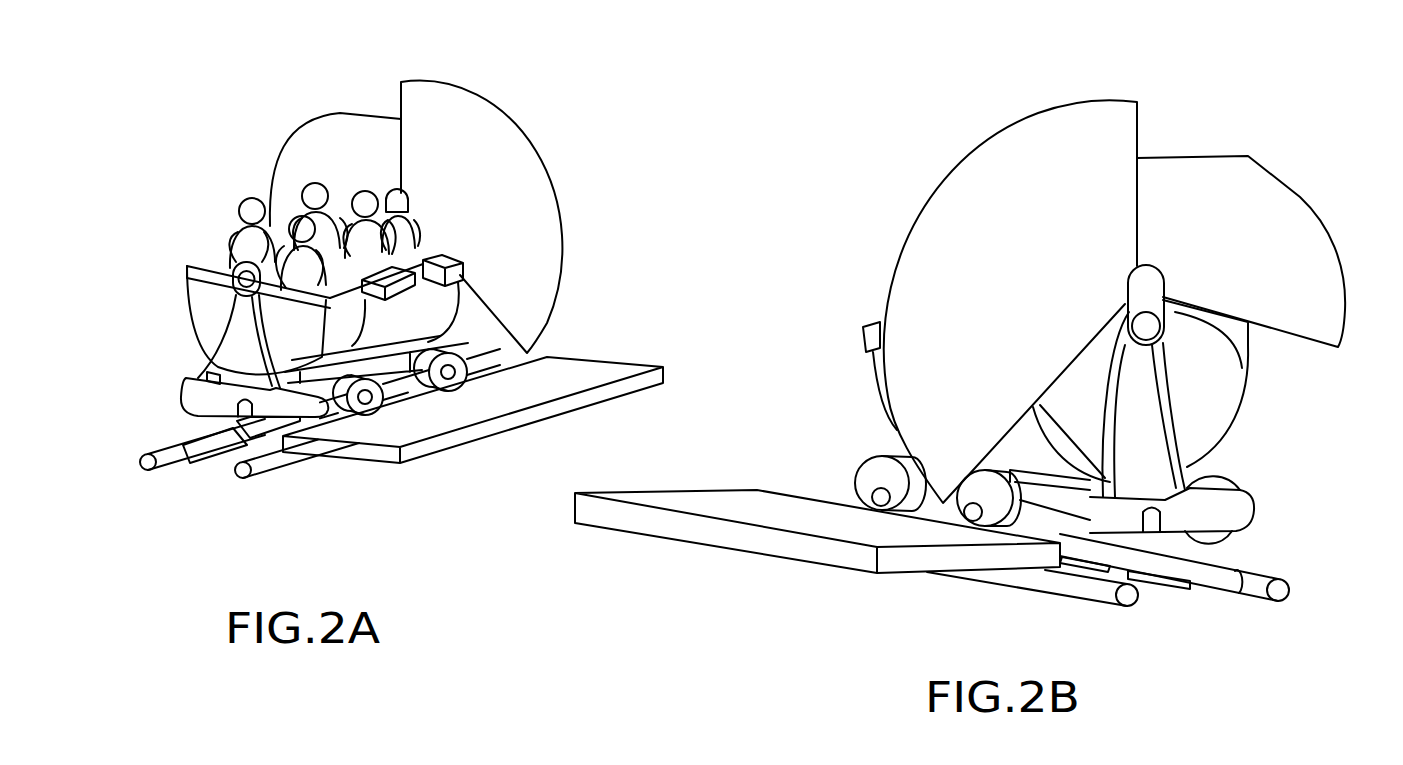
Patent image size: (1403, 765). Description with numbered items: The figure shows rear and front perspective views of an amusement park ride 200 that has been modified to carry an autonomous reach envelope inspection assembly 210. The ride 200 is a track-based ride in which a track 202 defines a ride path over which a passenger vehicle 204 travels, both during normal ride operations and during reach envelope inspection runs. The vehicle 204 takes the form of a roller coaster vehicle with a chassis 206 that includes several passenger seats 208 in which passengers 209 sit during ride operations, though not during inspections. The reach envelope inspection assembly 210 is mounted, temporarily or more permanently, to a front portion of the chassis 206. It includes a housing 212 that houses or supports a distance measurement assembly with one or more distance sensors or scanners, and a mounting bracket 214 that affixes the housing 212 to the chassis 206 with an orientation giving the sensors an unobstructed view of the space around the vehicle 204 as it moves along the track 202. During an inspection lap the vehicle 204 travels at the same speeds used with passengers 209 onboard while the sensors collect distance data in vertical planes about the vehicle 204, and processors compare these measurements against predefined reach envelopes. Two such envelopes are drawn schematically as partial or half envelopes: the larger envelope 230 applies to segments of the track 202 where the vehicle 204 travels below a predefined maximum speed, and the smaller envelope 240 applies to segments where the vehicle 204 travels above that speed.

In FIG. 2A, the amusement park ride 200 is at (154, 414).
In FIG. 2B, the amusement park ride 200 is at (1244, 622).
In FIG. 2A, the track 202 is at (277, 487).
In FIG. 2B, the track 202 is at (1314, 583).
In FIG. 2A, the passenger vehicle 204 is at (165, 290).
In FIG. 2A, the chassis 206 is at (190, 337).
In FIG. 2B, the chassis 206 is at (1252, 318).
In FIG. 2A, the passenger seats 208 is at (223, 248).
In FIG. 2A, the passengers 209 is at (228, 250).
In FIG. 2A, the reach envelope inspection assembly 210 is at (430, 206).
In FIG. 2B, the reach envelope inspection assembly 210 is at (1225, 340).
In FIG. 2B, the housing 212 is at (1163, 284).
In FIG. 2B, the mounting bracket 214 is at (1163, 330).
In FIG. 2A, the reach envelope 230 is at (520, 106).
In FIG. 2B, the reach envelope 230 is at (1038, 107).
In FIG. 2A, the reach envelope 240 is at (366, 101).
In FIG. 2B, the reach envelope 240 is at (1244, 149).